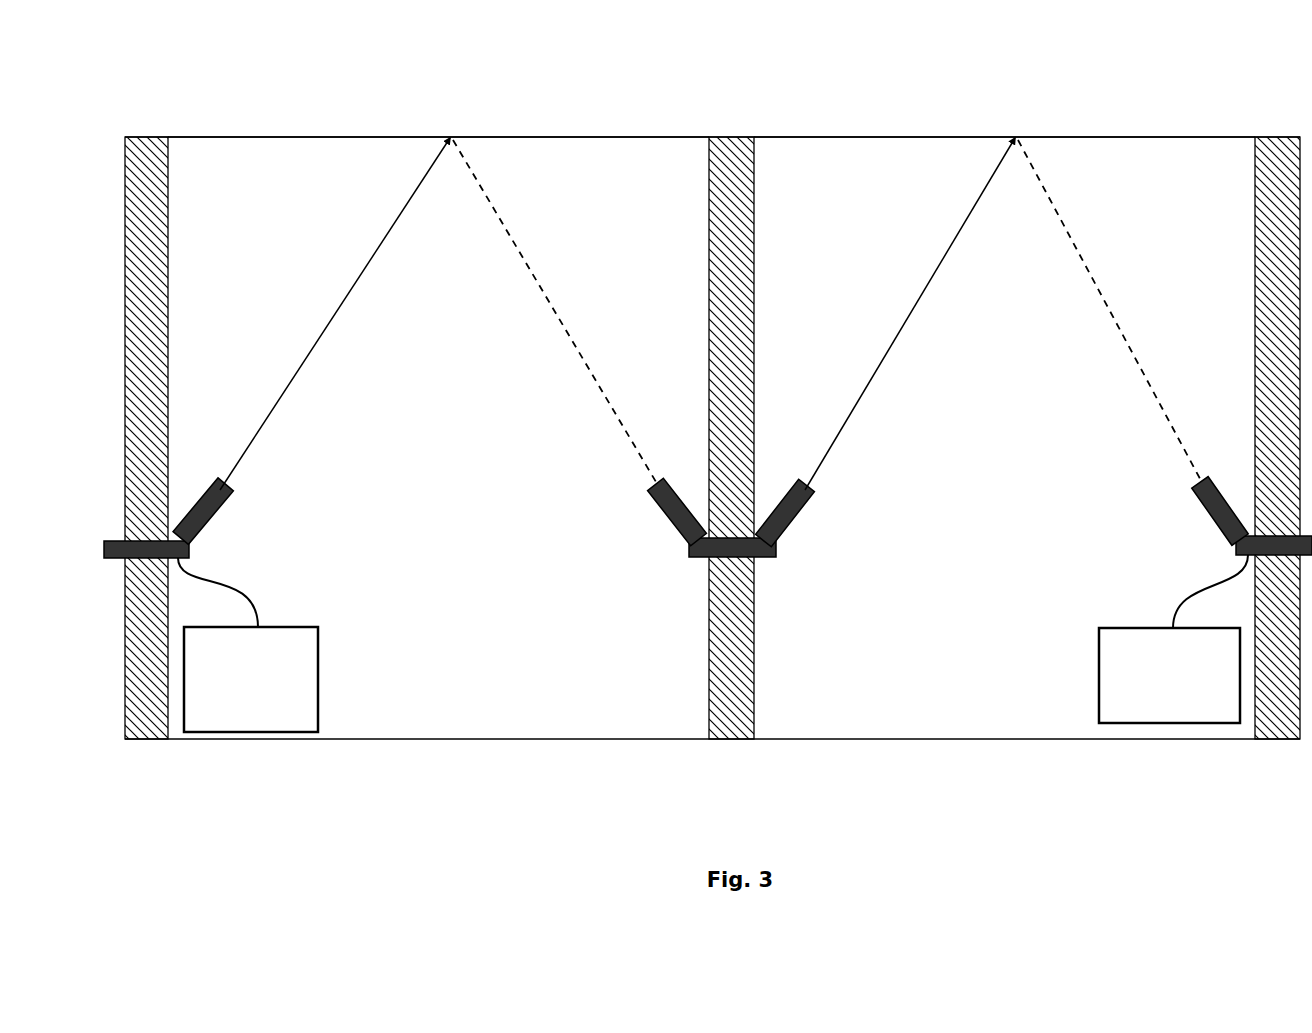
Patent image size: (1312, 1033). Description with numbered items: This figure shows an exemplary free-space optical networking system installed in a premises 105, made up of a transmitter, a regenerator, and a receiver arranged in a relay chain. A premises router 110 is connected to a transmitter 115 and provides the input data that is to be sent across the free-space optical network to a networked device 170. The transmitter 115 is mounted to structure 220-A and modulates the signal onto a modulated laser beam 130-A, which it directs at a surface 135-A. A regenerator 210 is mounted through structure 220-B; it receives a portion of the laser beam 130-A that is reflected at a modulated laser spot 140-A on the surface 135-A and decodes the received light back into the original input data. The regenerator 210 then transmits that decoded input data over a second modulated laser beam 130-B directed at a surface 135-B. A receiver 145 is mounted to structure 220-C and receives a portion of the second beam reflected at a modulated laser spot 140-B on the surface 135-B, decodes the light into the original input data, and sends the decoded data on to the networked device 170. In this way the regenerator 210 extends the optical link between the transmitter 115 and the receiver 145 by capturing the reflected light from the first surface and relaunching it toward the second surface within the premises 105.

The premises 105 is at (592, 122).
The structure 220-A is at (144, 137).
The surface 135-A is at (376, 138).
The structure 220-B is at (727, 137).
The surface 135-B is at (972, 136).
The structure 220-C is at (1278, 135).
The transmitter 115 is at (204, 533).
The premises router 110 is at (248, 645).
The modulated laser beam 130-A is at (335, 332).
The modulated laser spot 140-A is at (475, 148).
The regenerator 210 is at (682, 560).
The modulated laser beam 130-B is at (900, 343).
The modulated laser spot 140-B is at (1040, 147).
The receiver 145 is at (1218, 522).
The networked device 170 is at (1173, 639).